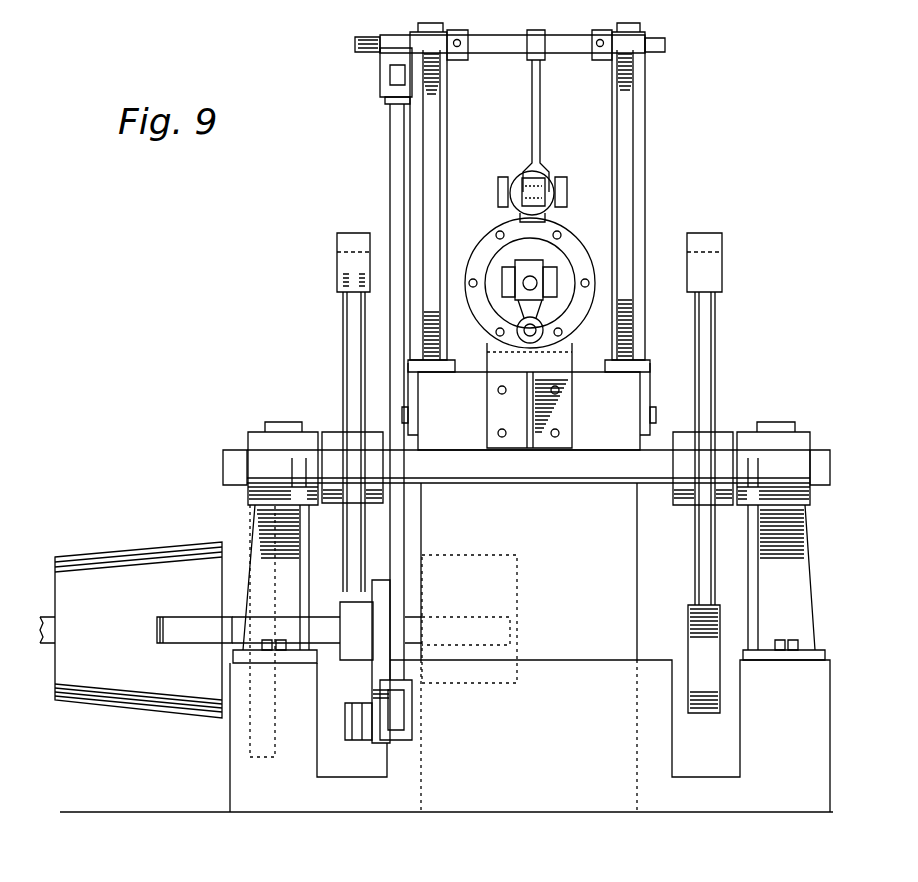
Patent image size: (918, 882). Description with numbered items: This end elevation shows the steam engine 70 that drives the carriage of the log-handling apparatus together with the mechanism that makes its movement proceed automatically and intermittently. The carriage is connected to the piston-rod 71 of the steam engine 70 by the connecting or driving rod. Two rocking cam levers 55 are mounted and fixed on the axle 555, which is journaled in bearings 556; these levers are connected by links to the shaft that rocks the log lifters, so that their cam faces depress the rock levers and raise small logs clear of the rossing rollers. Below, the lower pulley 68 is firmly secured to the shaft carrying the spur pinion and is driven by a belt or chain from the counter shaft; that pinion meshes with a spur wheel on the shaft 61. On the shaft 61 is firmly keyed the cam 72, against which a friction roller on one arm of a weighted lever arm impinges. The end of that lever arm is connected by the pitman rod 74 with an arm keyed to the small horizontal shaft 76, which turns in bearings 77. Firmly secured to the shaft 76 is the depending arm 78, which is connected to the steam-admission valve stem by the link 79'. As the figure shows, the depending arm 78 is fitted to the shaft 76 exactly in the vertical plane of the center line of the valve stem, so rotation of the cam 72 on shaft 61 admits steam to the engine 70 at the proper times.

The small horizontal shaft 76 is at (572, 46).
The bearings 77 is at (440, 143).
The depending arm 78 is at (543, 97).
The link 79' is at (550, 185).
The steam engine 70 is at (570, 246).
The piston-rod 71 is at (527, 277).
The rocking cam levers 55 is at (348, 367).
The axle 555 is at (563, 480).
The bearings 556 is at (529, 542).
The lower pulley 68 is at (136, 630).
The shaft 61 is at (322, 618).
The pitman rod 74 is at (396, 537).
The cam 72 is at (378, 683).